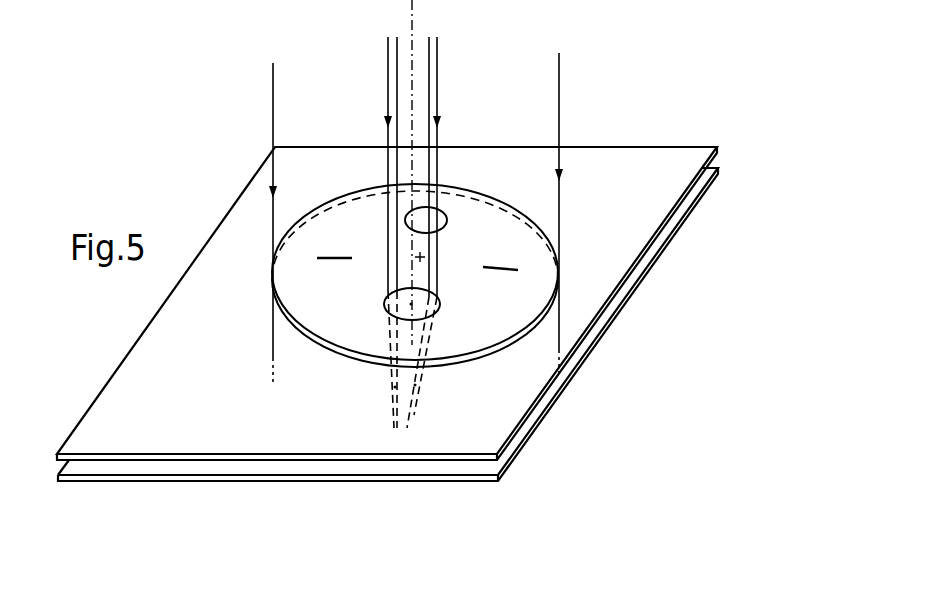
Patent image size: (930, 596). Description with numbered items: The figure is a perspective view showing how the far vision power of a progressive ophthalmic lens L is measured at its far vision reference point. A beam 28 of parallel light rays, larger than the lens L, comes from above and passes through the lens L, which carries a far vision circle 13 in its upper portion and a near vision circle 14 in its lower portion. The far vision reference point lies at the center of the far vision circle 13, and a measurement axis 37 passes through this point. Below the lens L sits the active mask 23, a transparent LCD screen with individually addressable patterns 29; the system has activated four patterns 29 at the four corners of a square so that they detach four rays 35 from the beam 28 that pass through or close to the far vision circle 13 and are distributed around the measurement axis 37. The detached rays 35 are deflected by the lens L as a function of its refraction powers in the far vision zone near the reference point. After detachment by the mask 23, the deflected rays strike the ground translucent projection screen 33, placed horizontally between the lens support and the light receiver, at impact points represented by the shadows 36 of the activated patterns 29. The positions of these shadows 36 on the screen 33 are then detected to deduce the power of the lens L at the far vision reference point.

The active mask 23 is at (680, 199).
The ground translucent screen 33 is at (518, 452).
The ophthalmic lens L is at (290, 289).
The near vision circle 14 is at (448, 222).
The far vision circle 13 is at (440, 309).
The detached rays 35 is at (437, 75).
The measurement axis 37 is at (410, 6).
The beam of parallel light rays 28 is at (559, 64).
The patterns 29 is at (395, 387).
The shadows 36 is at (408, 427).